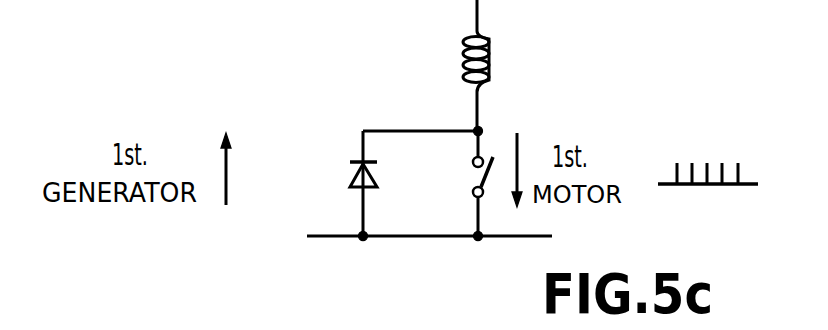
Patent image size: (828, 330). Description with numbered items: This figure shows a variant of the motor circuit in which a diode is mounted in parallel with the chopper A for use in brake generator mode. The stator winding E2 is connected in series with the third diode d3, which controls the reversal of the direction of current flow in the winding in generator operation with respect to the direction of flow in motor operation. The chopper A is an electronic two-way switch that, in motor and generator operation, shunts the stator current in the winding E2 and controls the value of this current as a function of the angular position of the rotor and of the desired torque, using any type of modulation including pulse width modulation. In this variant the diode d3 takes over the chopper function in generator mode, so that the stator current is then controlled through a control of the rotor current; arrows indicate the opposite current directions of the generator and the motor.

The second stator winding E2 is at (535, 65).
The third diode d3 is at (308, 177).
The chopper A is at (423, 113).